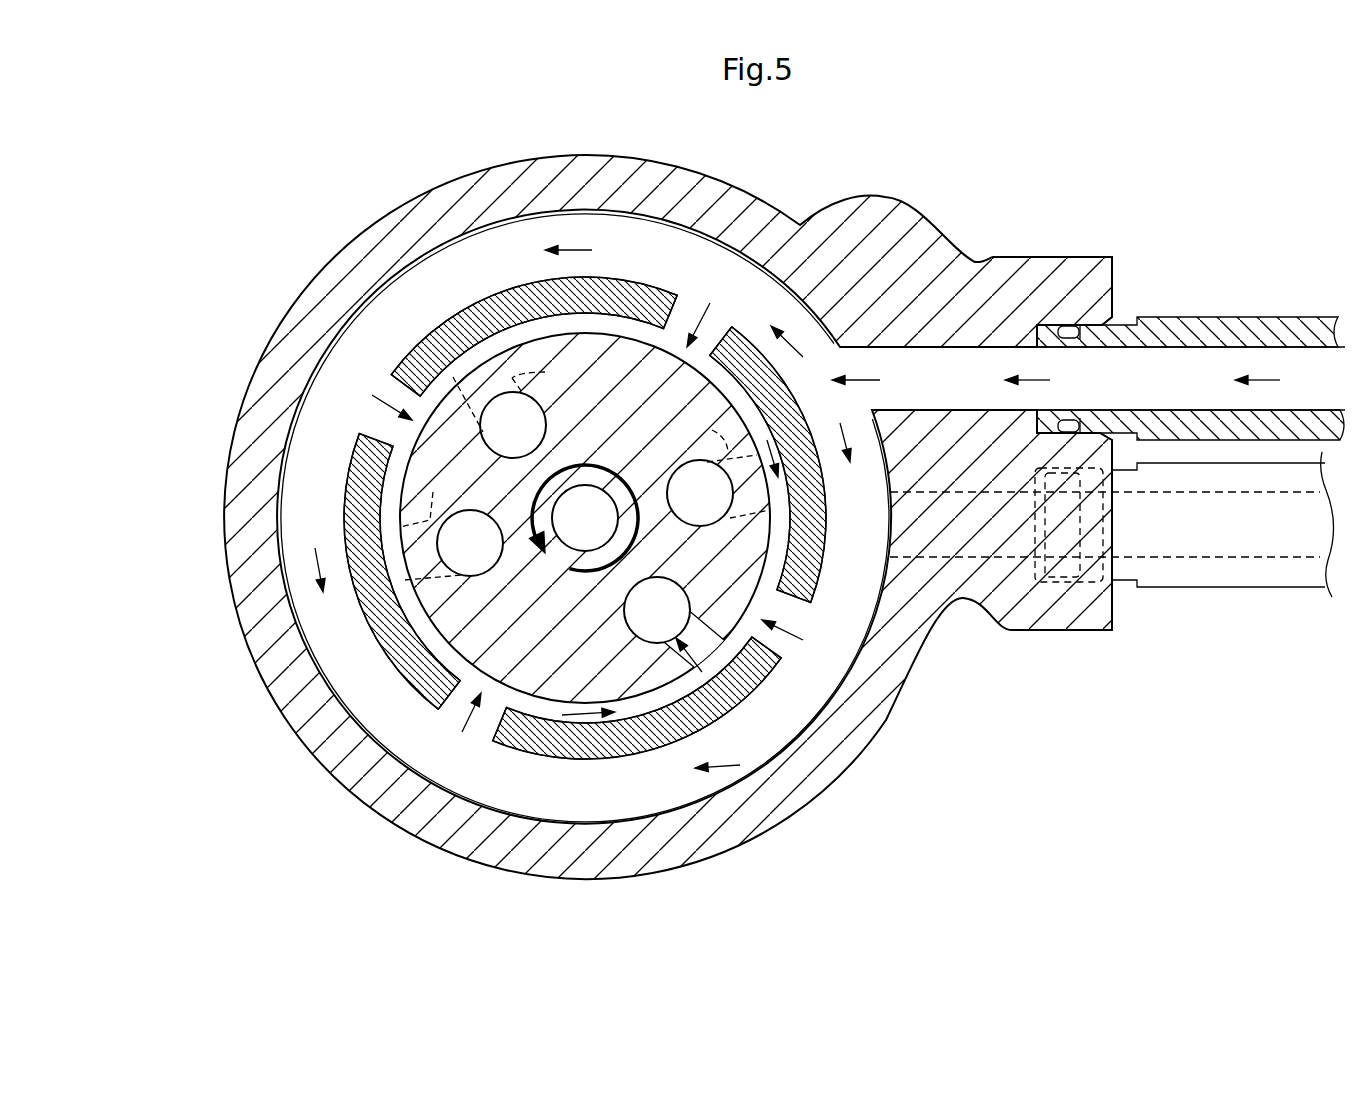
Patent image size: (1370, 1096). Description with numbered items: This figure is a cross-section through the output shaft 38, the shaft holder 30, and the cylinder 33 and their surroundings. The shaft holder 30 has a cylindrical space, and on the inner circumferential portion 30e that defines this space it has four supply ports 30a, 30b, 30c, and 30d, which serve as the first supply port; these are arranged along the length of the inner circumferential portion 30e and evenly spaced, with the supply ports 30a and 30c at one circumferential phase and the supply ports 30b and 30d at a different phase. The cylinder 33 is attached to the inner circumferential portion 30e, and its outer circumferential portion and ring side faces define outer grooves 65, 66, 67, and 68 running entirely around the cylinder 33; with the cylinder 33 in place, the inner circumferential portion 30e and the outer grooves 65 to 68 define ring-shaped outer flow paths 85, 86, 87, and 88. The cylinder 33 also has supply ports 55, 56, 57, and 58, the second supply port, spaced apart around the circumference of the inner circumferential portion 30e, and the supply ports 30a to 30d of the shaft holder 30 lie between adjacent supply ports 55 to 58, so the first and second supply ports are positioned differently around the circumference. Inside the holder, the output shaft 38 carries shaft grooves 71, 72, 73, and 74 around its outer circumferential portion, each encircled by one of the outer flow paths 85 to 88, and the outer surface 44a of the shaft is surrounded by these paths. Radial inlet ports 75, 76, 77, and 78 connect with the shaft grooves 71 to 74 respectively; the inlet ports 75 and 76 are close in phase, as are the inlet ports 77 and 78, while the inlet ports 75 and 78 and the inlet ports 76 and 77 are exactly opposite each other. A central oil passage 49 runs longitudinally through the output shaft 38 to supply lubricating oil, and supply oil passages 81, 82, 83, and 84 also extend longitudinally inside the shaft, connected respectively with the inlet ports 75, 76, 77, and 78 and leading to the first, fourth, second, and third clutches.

The shaft holder 30 is at (915, 203).
The supply port 30a is at (1034, 559).
The supply port 30b is at (1043, 288).
The supply port 30c is at (1062, 531).
The supply port 30d is at (1052, 291).
The inner circumferential portion 30e is at (345, 690).
The cylinder 33 is at (757, 516).
The output shaft 38 is at (607, 333).
The outer peripheral surface of rotor 44a is at (556, 715).
The oil passage 49 is at (580, 545).
The supply port 55 is at (680, 310).
The supply port 56 is at (772, 655).
The supply port 57 is at (446, 696).
The supply port 58 is at (385, 410).
The outer groove 65 is at (813, 518).
The outer groove 66 is at (813, 518).
The outer groove 67 is at (813, 518).
The outer groove 68 is at (440, 293).
The shaft groove 71 is at (585, 567).
The shaft groove 72 is at (585, 468).
The shaft groove 73 is at (585, 468).
The shaft groove 74 is at (585, 468).
The inlet port 75 is at (515, 392).
The inlet port 76 is at (431, 524).
The inlet port 77 is at (726, 467).
The inlet port 78 is at (665, 663).
The supply oil passage 81 is at (545, 437).
The supply oil passage 82 is at (474, 568).
The supply oil passage 83 is at (672, 480).
The supply oil passage 84 is at (680, 597).
The outer flow path 85 is at (790, 481).
The outer flow path 86 is at (813, 518).
The outer flow path 87 is at (813, 518).
The outer flow path 88 is at (813, 518).